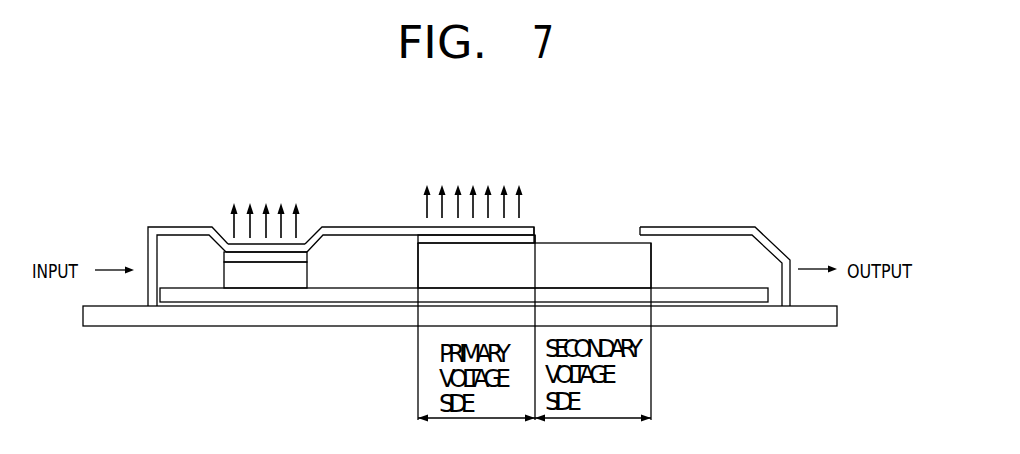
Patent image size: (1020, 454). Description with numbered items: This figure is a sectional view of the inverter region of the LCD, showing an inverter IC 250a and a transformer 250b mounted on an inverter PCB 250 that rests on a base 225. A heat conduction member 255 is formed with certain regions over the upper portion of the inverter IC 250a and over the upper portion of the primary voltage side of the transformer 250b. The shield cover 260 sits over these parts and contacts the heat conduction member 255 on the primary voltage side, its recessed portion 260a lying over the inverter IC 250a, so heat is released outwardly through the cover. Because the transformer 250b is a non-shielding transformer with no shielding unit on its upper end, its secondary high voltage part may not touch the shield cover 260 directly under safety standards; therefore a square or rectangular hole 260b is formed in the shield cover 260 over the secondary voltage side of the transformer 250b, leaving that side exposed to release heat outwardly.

The base plate 225 is at (698, 326).
The core plate 250 is at (368, 300).
The inverter IC 250a is at (293, 282).
The transformer 250b is at (552, 258).
The heat conduction member 255 is at (430, 241).
The shield cover 260 is at (355, 232).
The recessed heat dissipating portion of cover 260a is at (273, 250).
The hole 260b is at (600, 224).